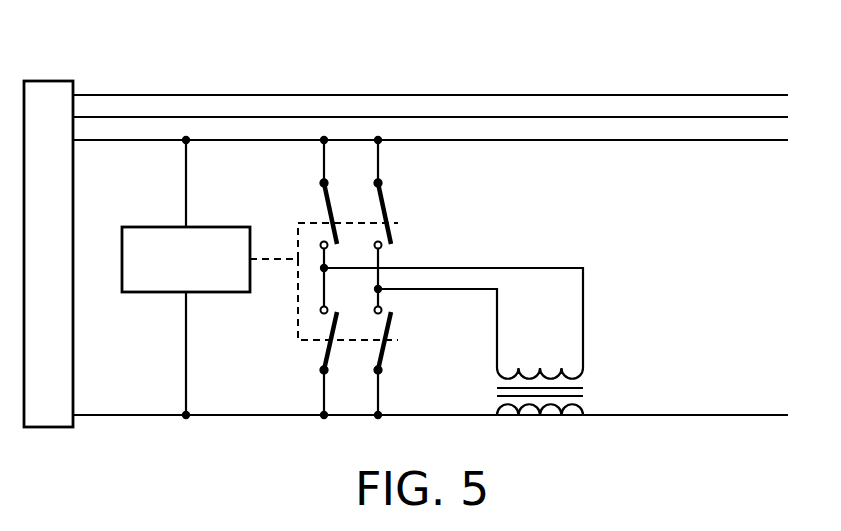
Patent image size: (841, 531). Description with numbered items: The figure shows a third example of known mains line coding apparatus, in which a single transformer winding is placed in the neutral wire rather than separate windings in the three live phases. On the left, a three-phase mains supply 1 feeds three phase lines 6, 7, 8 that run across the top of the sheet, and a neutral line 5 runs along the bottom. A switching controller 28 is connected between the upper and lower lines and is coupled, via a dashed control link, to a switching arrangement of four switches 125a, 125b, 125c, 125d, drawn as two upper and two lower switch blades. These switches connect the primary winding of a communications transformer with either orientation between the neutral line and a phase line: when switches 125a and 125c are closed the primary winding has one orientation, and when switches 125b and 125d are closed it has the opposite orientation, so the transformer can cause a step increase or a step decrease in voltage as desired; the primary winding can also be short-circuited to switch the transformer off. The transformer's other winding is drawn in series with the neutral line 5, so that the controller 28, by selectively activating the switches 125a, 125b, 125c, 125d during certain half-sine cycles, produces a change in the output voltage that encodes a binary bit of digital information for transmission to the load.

The mains supply transformer 1 is at (50, 81).
The output line 5 is at (705, 415).
The output voltage 6 is at (616, 140).
The second phase line 7 is at (663, 117).
The lighting fixtures 8 is at (707, 95).
The switching controller 28 is at (145, 227).
The switch 125a is at (388, 207).
The switch 125b is at (384, 354).
The switch 125c is at (323, 354).
The switch 125d is at (323, 208).